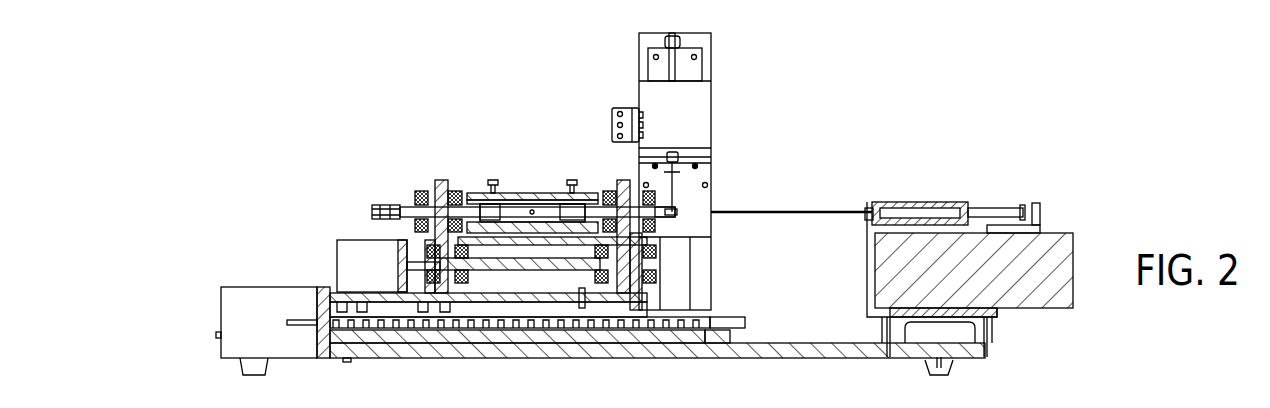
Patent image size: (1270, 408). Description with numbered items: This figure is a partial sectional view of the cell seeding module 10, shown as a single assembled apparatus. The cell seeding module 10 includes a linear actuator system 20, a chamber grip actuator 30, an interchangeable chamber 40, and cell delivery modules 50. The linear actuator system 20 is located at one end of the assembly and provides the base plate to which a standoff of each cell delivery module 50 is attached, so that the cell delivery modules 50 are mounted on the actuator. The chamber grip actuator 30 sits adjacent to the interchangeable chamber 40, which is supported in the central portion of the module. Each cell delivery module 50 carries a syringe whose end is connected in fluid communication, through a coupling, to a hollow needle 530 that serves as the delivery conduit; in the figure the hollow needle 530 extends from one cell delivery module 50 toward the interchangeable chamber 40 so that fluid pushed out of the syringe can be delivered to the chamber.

The cell seeding module 10 is at (1017, 131).
The linear actuator system 20 is at (214, 327).
The chamber grip actuator 30 is at (327, 266).
The interchangeable chamber 40 is at (384, 197).
The cell delivery module 50 is at (725, 148).
The hollow needle 530 is at (808, 212).